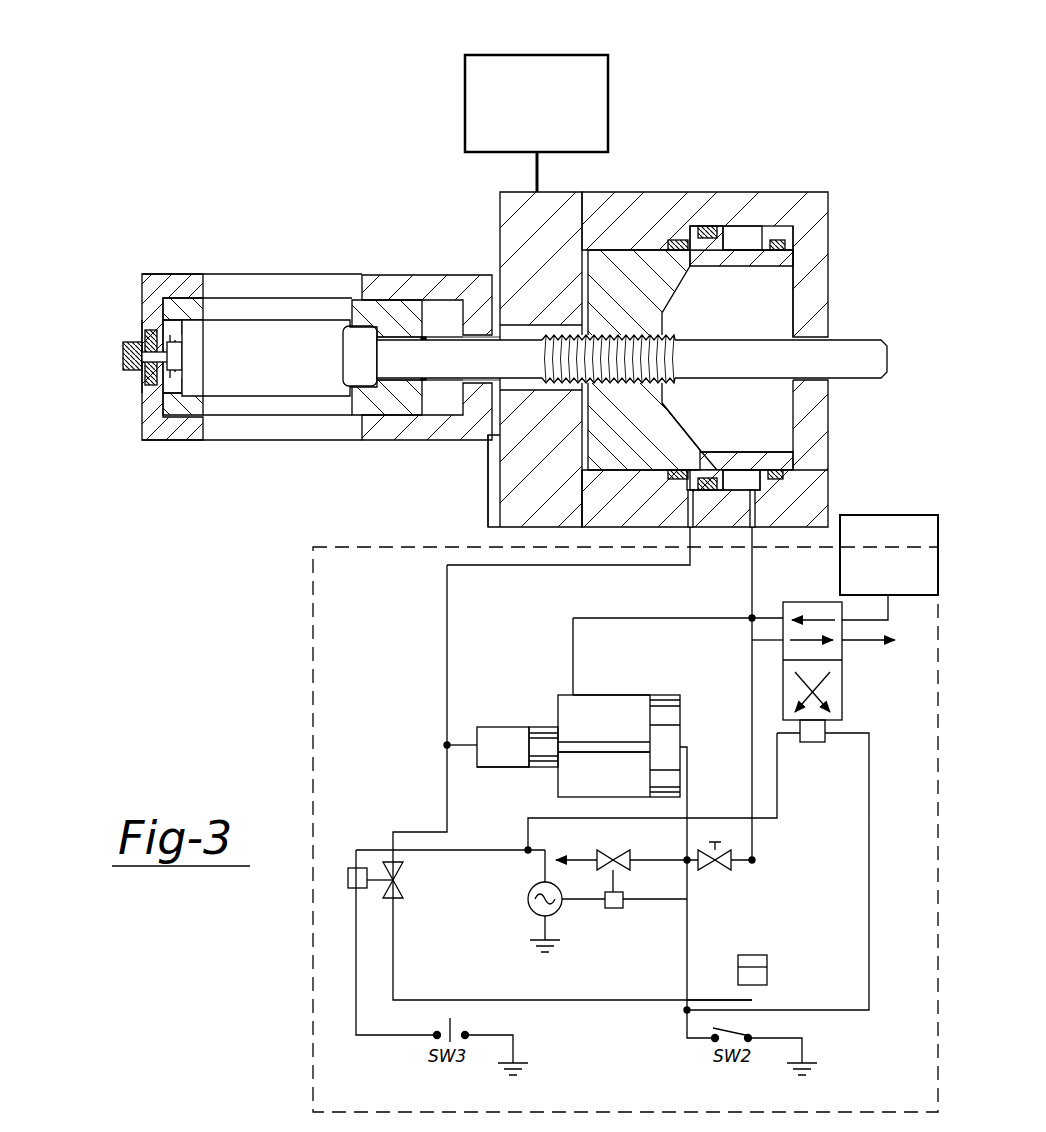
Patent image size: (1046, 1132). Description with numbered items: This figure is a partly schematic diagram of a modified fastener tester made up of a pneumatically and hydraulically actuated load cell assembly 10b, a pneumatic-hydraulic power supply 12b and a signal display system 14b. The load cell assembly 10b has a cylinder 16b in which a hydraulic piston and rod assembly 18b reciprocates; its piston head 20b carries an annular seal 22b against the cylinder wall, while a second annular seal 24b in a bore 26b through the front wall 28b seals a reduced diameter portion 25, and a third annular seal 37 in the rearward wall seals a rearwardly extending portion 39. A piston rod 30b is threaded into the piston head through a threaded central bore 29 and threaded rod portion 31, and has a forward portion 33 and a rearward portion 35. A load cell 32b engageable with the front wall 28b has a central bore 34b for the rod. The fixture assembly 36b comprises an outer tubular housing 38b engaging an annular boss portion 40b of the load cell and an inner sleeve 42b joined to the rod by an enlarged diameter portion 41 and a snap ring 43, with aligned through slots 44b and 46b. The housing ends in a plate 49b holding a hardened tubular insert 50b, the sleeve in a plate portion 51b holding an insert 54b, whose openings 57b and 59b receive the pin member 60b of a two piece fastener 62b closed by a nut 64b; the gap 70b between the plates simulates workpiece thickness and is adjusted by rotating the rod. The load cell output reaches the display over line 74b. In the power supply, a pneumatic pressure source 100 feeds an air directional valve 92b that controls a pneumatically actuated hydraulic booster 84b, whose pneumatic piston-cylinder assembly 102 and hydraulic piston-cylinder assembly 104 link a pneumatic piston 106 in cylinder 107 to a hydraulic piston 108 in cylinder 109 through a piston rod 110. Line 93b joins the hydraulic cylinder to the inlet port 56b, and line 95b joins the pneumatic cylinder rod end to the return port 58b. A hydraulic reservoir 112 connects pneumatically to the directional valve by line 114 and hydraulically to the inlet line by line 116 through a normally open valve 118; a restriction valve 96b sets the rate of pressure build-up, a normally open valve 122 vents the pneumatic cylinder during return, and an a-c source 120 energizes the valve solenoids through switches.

The load cell assembly 10b is at (775, 170).
The pneumatic-hydraulic power supply 12b is at (365, 540).
The signal display system 14b is at (565, 52).
The cylinder 16b is at (790, 190).
The hydraulic piston and rod assembly 18b is at (680, 297).
The piston head 20b is at (715, 470).
The annular seal 22b is at (735, 226).
The annular seal 24b is at (707, 226).
The reduced diameter portion 25 is at (625, 455).
The bore 26b is at (676, 240).
The front wall 28b is at (588, 492).
The threaded central bore 29 is at (612, 345).
The piston rod 30b is at (785, 300).
The threaded rod portion 31 is at (565, 325).
The load cell 32b is at (575, 190).
The forward portion 33 is at (513, 350).
The central bore 34b is at (500, 510).
The rearward portion 35 is at (827, 357).
The fixture assembly 36b is at (140, 450).
The annular seal 37 is at (778, 278).
The outer tubular housing 38b is at (440, 238).
The rearwardly extending portion 39 is at (824, 350).
The annular boss portion 40b is at (490, 442).
The enlarged diameter portion 41 is at (350, 378).
The inner sleeve 42b is at (397, 413).
The snap ring 43 is at (425, 338).
The through slot 44b is at (258, 310).
The through slot 46b is at (293, 288).
The plate 49b is at (143, 323).
The hardened tubular insert 50b is at (162, 320).
The plate portion 51b is at (170, 323).
The hardened tubular insert 54b is at (192, 390).
The inlet port 56b is at (688, 515).
The opening 57b is at (148, 370).
The return port 58b is at (752, 512).
The opening 59b is at (177, 353).
The pin member 60b is at (123, 355).
The two piece fastener 62b is at (118, 365).
The nut 64b is at (140, 332).
The gap 70b is at (165, 440).
The line 74b is at (537, 172).
The pneumatically actuated hydraulic booster 84b is at (678, 683).
The air directional valve 92b is at (850, 694).
The line 93b is at (447, 663).
The line 95b is at (755, 593).
The restriction valve 96b is at (715, 870).
The pneumatic pressure source 100 is at (885, 518).
The pneumatic piston-cylinder assembly 102 is at (610, 800).
The hydraulic piston-cylinder assembly 104 is at (493, 727).
The pneumatic piston 106 is at (658, 697).
The pneumatic cylinder 107 is at (615, 705).
The hydraulic piston 108 is at (540, 733).
The hydraulic cylinder 109 is at (497, 767).
The piston rod 110 is at (583, 760).
The hydraulic reservoir 112 is at (768, 970).
The line 114 is at (750, 740).
The line 116 is at (702, 1000).
The valve 118 is at (403, 878).
The a-c source 120 is at (530, 905).
The valve 122 is at (615, 893).